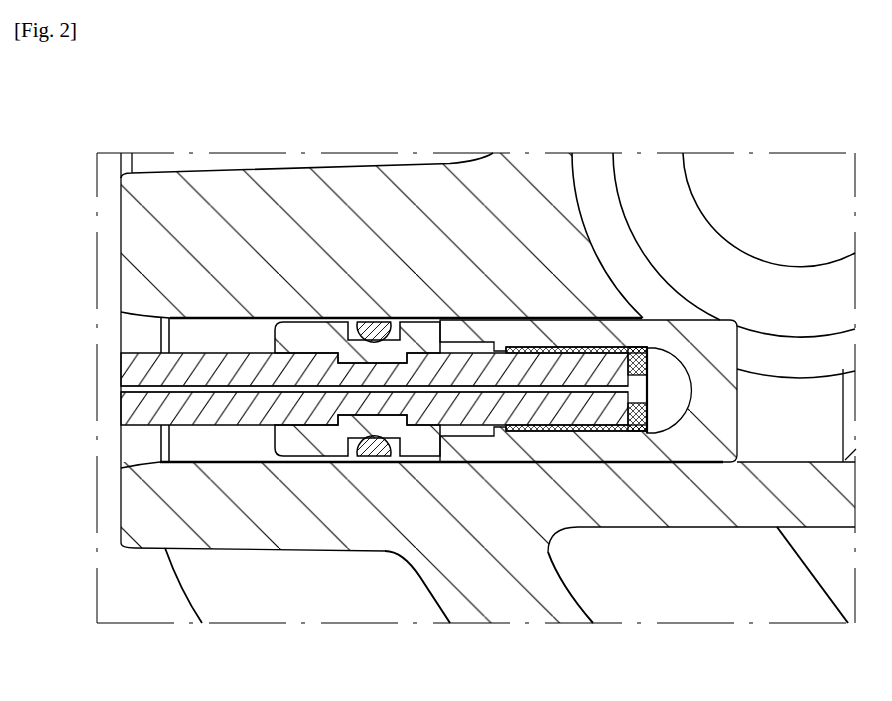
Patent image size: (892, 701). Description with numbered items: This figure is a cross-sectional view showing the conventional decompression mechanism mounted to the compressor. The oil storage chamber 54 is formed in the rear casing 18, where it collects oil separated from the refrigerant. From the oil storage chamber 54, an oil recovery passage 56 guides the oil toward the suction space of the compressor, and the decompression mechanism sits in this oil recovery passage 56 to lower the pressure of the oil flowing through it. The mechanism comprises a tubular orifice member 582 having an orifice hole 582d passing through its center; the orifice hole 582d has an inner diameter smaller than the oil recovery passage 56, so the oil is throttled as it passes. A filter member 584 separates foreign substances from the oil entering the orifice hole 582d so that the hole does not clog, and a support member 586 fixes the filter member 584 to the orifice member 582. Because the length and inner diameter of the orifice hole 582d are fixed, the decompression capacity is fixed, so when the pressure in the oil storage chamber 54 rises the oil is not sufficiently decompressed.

The rear casing 18 is at (366, 189).
The oil storage chamber 54 is at (765, 189).
The oil recovery passage 56 is at (192, 331).
The orifice member 582 is at (130, 369).
The orifice hole 582d is at (154, 391).
The filter member 584 is at (642, 432).
The support member 586 is at (425, 449).